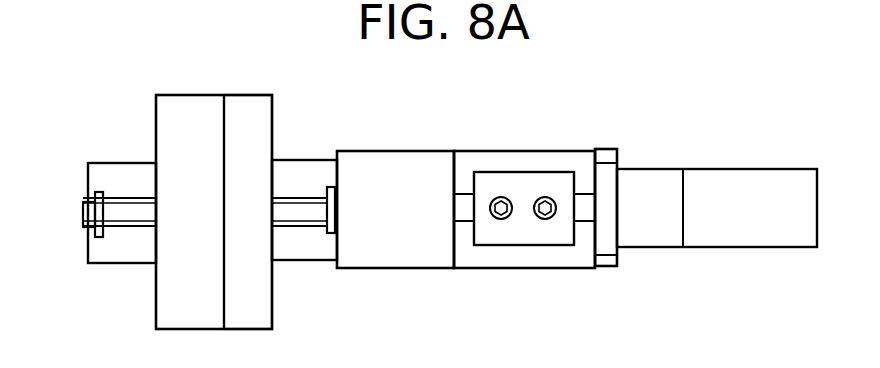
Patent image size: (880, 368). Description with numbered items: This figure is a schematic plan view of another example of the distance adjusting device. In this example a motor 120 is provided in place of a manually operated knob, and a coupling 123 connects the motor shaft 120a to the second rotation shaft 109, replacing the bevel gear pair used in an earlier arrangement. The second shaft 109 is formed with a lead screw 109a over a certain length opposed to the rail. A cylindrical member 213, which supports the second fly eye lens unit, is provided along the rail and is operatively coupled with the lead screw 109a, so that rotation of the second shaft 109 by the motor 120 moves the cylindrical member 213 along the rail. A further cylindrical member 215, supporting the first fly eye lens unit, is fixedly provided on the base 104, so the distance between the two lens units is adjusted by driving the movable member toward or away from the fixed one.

The cylindrical member 215 is at (180, 127).
The cylindrical member 213 is at (247, 117).
The second rotation shaft 109 is at (463, 203).
The lead screw 109a is at (119, 230).
The base 104 is at (413, 240).
The coupling 123 is at (523, 187).
The motor shaft 120a is at (587, 205).
The motor 120 is at (728, 212).